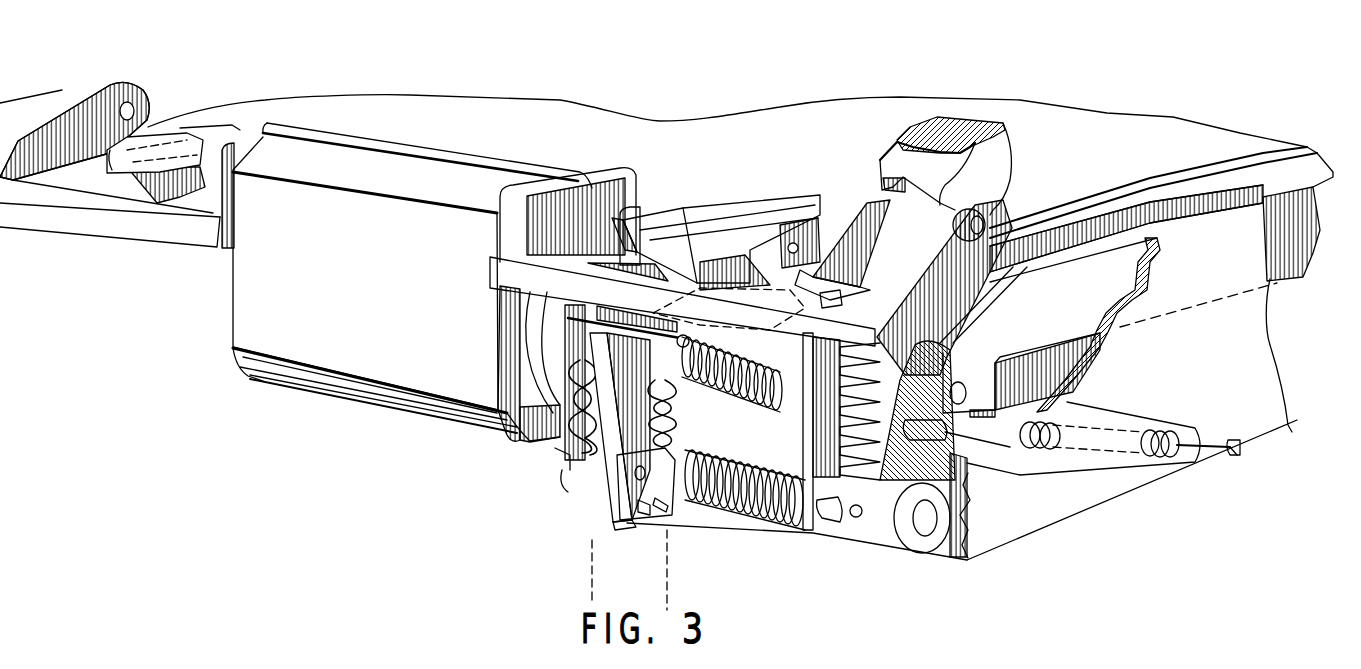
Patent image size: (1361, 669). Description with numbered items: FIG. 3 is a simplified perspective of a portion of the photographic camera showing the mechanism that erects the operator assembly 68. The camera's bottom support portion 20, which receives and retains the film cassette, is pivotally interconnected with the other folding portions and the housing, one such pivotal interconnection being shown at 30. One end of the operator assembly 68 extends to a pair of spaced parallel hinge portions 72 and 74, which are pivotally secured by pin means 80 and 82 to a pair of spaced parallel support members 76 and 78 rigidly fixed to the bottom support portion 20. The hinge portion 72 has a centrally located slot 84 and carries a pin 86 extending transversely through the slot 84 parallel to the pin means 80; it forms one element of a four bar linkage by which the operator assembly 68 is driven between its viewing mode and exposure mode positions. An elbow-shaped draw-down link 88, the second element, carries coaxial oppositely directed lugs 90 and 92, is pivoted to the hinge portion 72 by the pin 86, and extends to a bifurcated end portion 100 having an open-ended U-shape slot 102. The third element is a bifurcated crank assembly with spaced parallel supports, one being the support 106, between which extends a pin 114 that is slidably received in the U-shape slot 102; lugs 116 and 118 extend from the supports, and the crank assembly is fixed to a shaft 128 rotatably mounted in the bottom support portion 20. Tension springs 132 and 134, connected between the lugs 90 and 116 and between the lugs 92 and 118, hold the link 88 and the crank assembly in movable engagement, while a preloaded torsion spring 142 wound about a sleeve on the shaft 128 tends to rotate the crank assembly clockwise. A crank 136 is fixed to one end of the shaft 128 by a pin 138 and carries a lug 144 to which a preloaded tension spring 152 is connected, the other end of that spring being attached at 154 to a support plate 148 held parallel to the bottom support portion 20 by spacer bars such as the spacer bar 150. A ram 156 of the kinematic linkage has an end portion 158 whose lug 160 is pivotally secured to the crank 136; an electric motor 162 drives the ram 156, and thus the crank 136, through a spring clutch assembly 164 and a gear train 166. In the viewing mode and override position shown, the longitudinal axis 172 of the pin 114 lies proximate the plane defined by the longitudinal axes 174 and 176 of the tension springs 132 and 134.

The bottom support portion 20 is at (100, 228).
The pivotal interconnection 30 is at (926, 340).
The operator assembly 68 is at (500, 137).
The hinge portion 72 is at (698, 220).
The hinge portion 74 is at (187, 187).
The support member 76 is at (660, 210).
The support member 78 is at (236, 145).
The pin means 80 is at (817, 223).
The pin means 82 is at (180, 132).
The slot 84 is at (730, 243).
The pin 86 is at (808, 299).
The draw-down link 88 is at (573, 487).
The lug 90 is at (700, 322).
The lug 92 is at (593, 310).
The bifurcated end portion 100 is at (600, 507).
The U-shape slot 102 is at (633, 525).
The support 106 is at (643, 517).
The pin 114 is at (713, 507).
The lug 116 is at (677, 520).
The lug 118 is at (567, 480).
The shaft 128 is at (923, 517).
The tension spring 132 is at (687, 400).
The tension spring 134 is at (580, 387).
The crank 136 is at (967, 510).
The pin 138 is at (857, 520).
The torsion spring 142 is at (773, 517).
The lug 144 is at (923, 427).
The support plate 148 is at (1257, 410).
The spacer bar 150 is at (820, 513).
The tension spring 152 is at (1053, 448).
The connection point 154 is at (1238, 453).
The ram 156 is at (1072, 309).
The end portion 158 is at (980, 387).
The lug 160 is at (947, 363).
The electric motor 162 is at (350, 278).
The spring clutch assembly 164 is at (773, 387).
The gear train 166 is at (1020, 237).
The longitudinal axis 172 is at (557, 450).
The longitudinal axis 174 is at (670, 597).
The longitudinal axis 176 is at (590, 582).